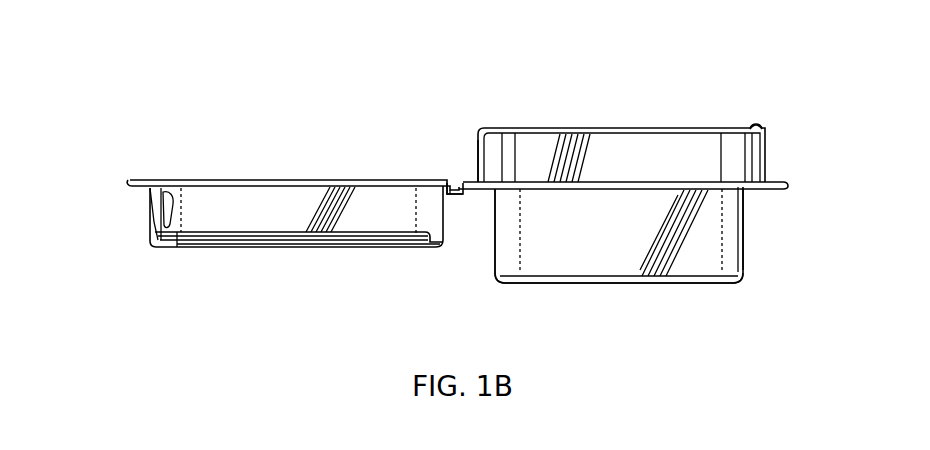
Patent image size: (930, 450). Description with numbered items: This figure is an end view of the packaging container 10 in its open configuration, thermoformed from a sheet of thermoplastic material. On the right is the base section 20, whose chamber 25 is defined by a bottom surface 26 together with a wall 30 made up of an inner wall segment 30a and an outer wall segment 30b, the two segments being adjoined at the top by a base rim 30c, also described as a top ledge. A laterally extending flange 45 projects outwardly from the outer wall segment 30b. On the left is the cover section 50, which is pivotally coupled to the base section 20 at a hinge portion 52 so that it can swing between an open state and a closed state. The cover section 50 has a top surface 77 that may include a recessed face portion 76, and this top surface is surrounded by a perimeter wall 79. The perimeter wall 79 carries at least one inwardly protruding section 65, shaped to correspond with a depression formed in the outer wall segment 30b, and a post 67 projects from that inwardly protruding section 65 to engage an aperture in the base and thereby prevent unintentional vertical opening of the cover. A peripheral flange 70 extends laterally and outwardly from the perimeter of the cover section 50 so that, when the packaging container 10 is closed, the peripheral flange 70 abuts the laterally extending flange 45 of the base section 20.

The packaging container 10 is at (124, 142).
The base section 20 is at (648, 128).
The chamber 25 is at (590, 205).
The bottom surface 26 is at (627, 287).
The wall 30 is at (497, 269).
The inner wall segment 30a is at (742, 162).
The outer wall segment 30b is at (768, 146).
The base rim 30c is at (478, 130).
The laterally extending flange 45 is at (780, 182).
The cover section 50 is at (205, 179).
The hinge portion 52 is at (452, 178).
The inwardly protruding section 65 is at (152, 200).
The post 67 is at (155, 245).
The peripheral flange 70 is at (130, 179).
The recessed face portion 76 is at (277, 238).
The top surface 77 is at (400, 252).
The perimeter wall 79 is at (448, 222).